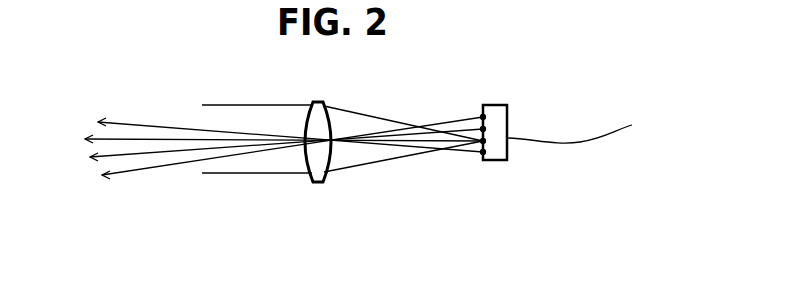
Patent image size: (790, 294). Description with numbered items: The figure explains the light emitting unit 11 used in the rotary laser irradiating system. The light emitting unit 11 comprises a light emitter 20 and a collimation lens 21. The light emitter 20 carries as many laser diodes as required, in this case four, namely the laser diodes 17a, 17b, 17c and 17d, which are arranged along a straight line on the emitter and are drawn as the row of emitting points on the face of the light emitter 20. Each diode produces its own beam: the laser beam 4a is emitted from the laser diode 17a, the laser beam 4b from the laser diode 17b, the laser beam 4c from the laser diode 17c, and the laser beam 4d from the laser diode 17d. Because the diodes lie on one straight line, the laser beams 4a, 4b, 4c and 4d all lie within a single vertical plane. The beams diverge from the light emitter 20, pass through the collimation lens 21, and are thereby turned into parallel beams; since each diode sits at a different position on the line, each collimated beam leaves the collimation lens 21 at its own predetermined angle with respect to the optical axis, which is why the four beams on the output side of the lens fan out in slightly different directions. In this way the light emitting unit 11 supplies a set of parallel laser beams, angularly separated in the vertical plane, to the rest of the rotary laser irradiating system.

The laser beam 4a is at (160, 168).
The laser beam 4b is at (135, 163).
The laser beam 4c is at (135, 140).
The laser beam 4d is at (122, 122).
The collimation lens 21 is at (321, 100).
The light emitting unit 11 is at (525, 115).
The laser diode 17a is at (481, 128).
The laser diode 17b is at (481, 116).
The laser diode 17c is at (481, 143).
The laser diode 17d is at (478, 156).
The light emitter 20 is at (591, 118).